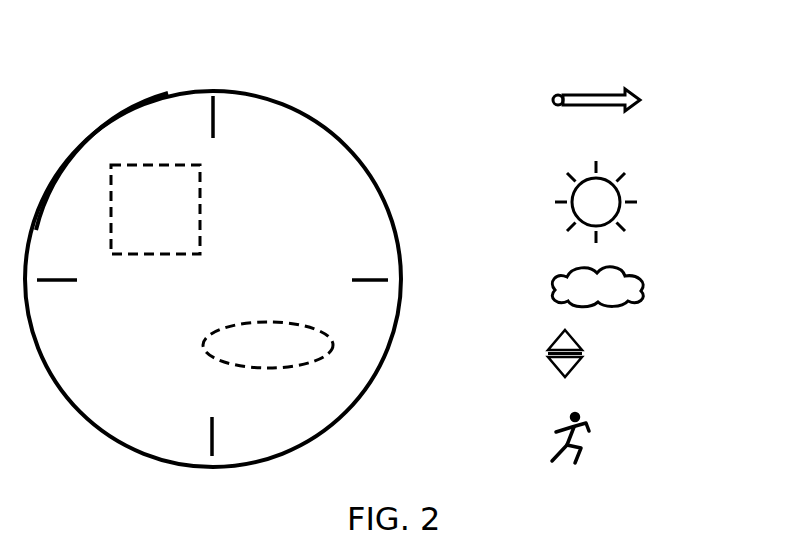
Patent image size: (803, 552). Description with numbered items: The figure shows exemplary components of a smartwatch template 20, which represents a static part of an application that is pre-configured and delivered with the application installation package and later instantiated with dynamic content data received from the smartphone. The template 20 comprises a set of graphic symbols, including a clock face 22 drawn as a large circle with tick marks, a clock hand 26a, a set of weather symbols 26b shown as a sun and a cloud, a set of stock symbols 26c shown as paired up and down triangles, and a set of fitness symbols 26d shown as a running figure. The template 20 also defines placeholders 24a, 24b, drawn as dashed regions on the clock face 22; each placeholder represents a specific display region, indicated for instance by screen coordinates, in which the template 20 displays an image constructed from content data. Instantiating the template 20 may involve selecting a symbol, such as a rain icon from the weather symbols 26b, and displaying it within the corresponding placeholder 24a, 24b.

The template 20 is at (432, 99).
The clock face 22 is at (164, 91).
The placeholder 24a is at (200, 165).
The placeholder 24b is at (275, 370).
The clock hand 26a is at (594, 91).
The set of weather symbols 26b is at (657, 290).
The set of stock symbols 26c is at (585, 328).
The set of fitness symbols 26d is at (585, 458).